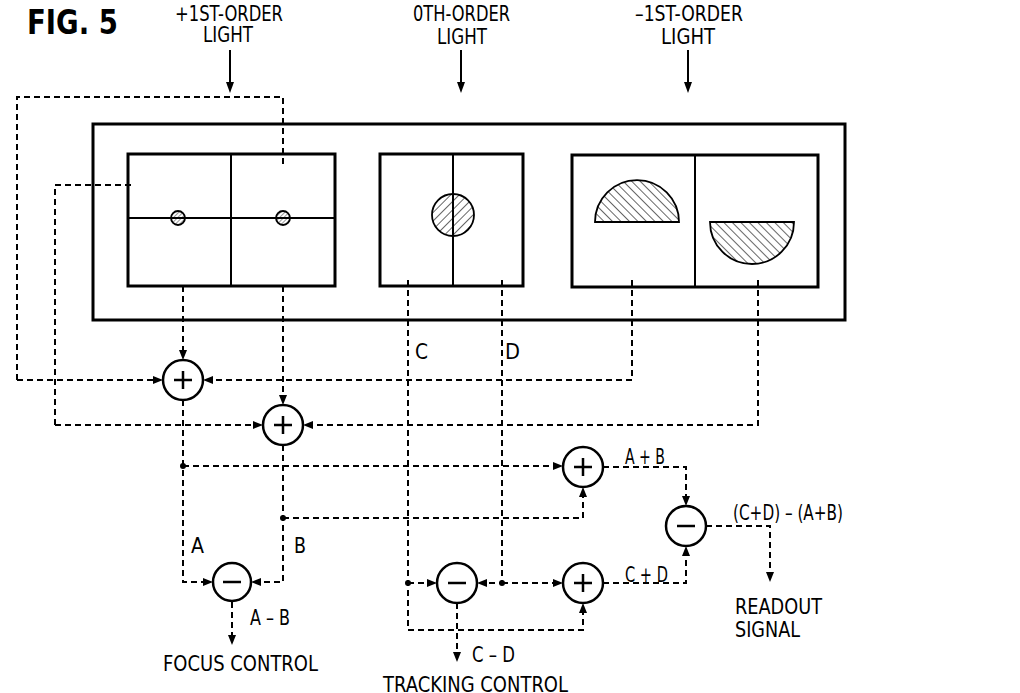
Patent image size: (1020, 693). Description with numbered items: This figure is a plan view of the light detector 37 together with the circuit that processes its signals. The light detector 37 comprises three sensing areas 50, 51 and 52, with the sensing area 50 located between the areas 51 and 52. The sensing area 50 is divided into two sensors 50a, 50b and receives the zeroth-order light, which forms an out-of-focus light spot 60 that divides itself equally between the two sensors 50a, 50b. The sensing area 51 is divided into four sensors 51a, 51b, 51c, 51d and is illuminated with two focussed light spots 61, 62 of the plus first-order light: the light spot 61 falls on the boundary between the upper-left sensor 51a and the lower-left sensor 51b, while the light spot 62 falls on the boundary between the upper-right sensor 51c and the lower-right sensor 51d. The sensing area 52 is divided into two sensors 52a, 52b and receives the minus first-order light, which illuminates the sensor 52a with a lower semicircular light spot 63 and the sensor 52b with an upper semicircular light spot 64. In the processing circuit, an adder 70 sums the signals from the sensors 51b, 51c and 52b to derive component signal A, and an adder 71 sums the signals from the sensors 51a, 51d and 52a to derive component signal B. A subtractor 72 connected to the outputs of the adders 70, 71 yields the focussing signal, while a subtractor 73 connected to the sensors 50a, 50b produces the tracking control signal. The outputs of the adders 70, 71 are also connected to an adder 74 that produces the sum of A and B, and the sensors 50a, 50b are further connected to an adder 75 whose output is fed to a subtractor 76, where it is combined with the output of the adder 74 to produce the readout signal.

The light detector 37 is at (818, 123).
The sensing area 50 is at (466, 133).
The sensor 50a is at (432, 268).
The sensor 50b is at (506, 268).
The sensing area 51 is at (238, 133).
The upper-left sensor 51a is at (186, 187).
The lower-left sensor 51b is at (201, 268).
The upper-right sensor 51c is at (280, 187).
The lower-right sensor 51d is at (303, 268).
The sensing area 52 is at (703, 133).
The sensor 52a is at (798, 196).
The sensor 52b is at (623, 268).
The out-of-focus light spot 60 is at (433, 220).
The light spot 61 is at (186, 214).
The light spot 62 is at (291, 214).
The lower semicircular light spot 63 is at (735, 220).
The upper semicircular light spot 64 is at (658, 224).
The adder 70 is at (198, 368).
The adder 71 is at (298, 413).
The subtractor 72 is at (236, 564).
The subtractor 73 is at (457, 563).
The adder 74 is at (599, 479).
The adder 75 is at (593, 566).
The subtractor 76 is at (700, 512).